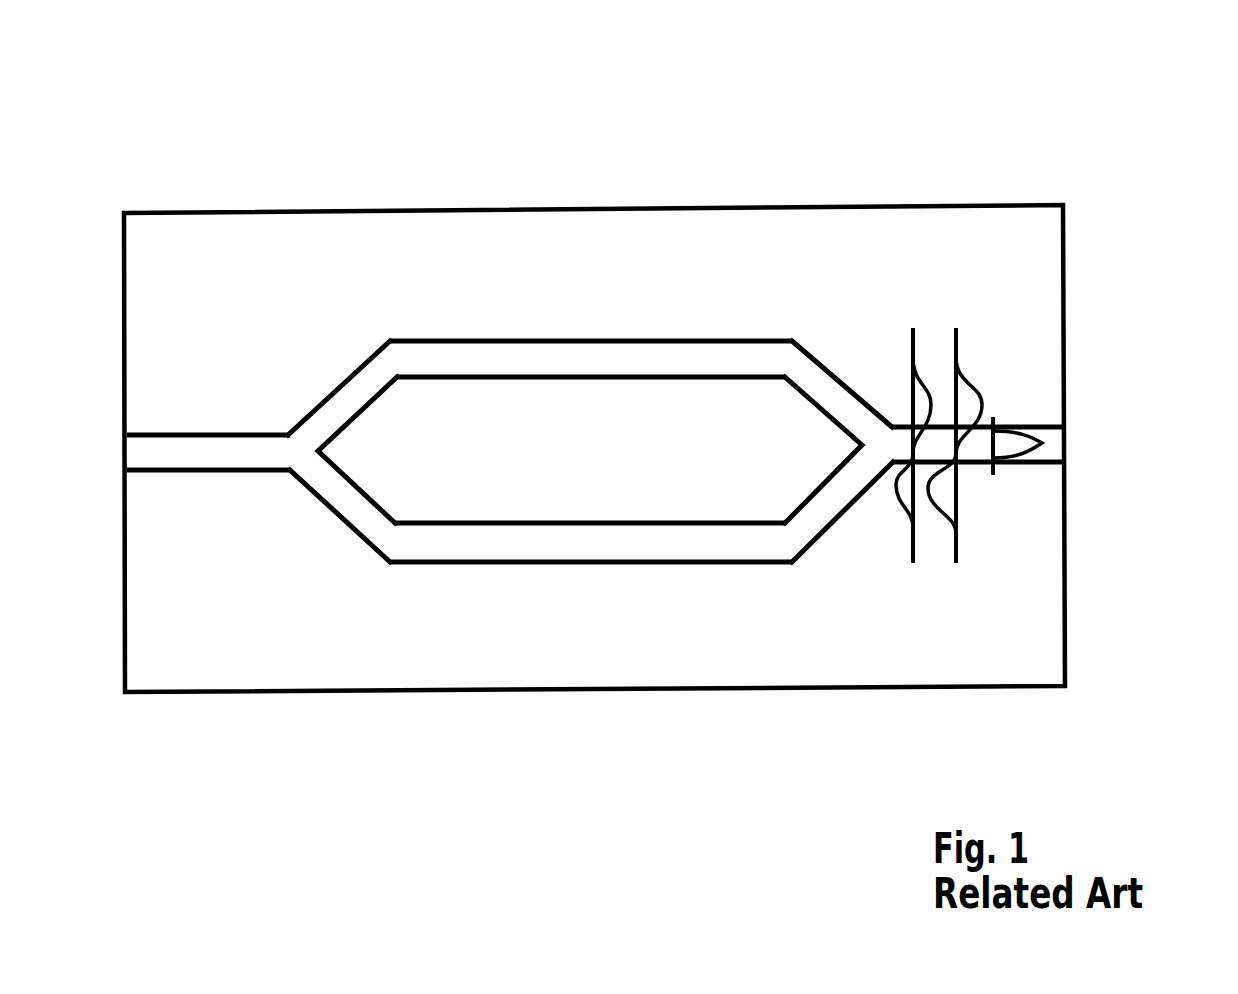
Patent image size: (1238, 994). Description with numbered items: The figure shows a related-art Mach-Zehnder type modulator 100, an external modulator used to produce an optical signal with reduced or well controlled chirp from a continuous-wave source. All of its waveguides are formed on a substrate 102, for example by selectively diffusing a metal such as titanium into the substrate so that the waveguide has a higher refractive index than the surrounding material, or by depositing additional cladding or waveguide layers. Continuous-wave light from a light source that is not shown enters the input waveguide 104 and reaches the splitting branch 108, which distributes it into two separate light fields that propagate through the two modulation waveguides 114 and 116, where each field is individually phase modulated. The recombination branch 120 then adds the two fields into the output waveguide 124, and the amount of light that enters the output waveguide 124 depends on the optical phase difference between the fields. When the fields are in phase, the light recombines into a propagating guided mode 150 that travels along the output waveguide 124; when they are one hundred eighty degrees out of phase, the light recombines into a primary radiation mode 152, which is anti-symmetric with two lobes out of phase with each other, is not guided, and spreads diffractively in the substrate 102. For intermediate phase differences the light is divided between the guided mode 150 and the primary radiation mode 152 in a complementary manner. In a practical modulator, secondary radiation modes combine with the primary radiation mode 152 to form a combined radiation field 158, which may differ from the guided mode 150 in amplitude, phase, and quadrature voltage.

The Mach-Zehnder type modulator 100 is at (1150, 158).
The substrate 102 is at (180, 248).
The input waveguide 104 is at (215, 450).
The splitting branch 108 is at (300, 455).
The modulation waveguide 114 is at (462, 365).
The modulation waveguide 116 is at (463, 540).
The recombination branch 120 is at (878, 432).
The output waveguide 124 is at (1047, 438).
The guided mode 150 is at (1017, 447).
The primary radiation mode 152 is at (905, 518).
The combined radiation field 158 is at (945, 527).